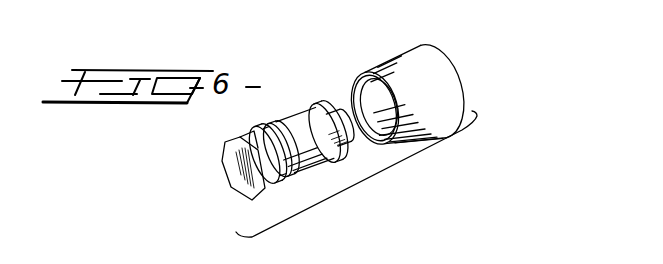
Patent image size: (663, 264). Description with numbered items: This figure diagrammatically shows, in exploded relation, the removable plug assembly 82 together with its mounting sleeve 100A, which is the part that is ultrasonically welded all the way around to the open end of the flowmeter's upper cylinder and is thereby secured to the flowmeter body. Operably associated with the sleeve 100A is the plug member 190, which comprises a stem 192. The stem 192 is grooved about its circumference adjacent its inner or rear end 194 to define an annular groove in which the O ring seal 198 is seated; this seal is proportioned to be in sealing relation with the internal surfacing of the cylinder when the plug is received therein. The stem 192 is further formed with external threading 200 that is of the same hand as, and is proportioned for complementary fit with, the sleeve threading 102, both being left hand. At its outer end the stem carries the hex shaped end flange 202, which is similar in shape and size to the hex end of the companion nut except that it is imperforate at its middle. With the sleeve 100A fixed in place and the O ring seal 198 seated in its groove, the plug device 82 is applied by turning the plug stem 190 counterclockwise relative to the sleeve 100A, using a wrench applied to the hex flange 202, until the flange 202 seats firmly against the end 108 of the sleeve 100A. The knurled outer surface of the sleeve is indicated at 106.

The removable plug assembly 82 is at (220, 183).
The hex shaped end flange 202 is at (230, 164).
The external threading 200 is at (293, 178).
The plug member 190 is at (291, 102).
The stem 192 is at (314, 164).
The inner or rear end 194 is at (334, 104).
The O ring seal 198 is at (334, 159).
The mounting sleeve 100A is at (438, 62).
The end of sleeve 108 is at (372, 77).
The sleeve threading 102 is at (380, 131).
The knurled cap body 106 is at (455, 92).